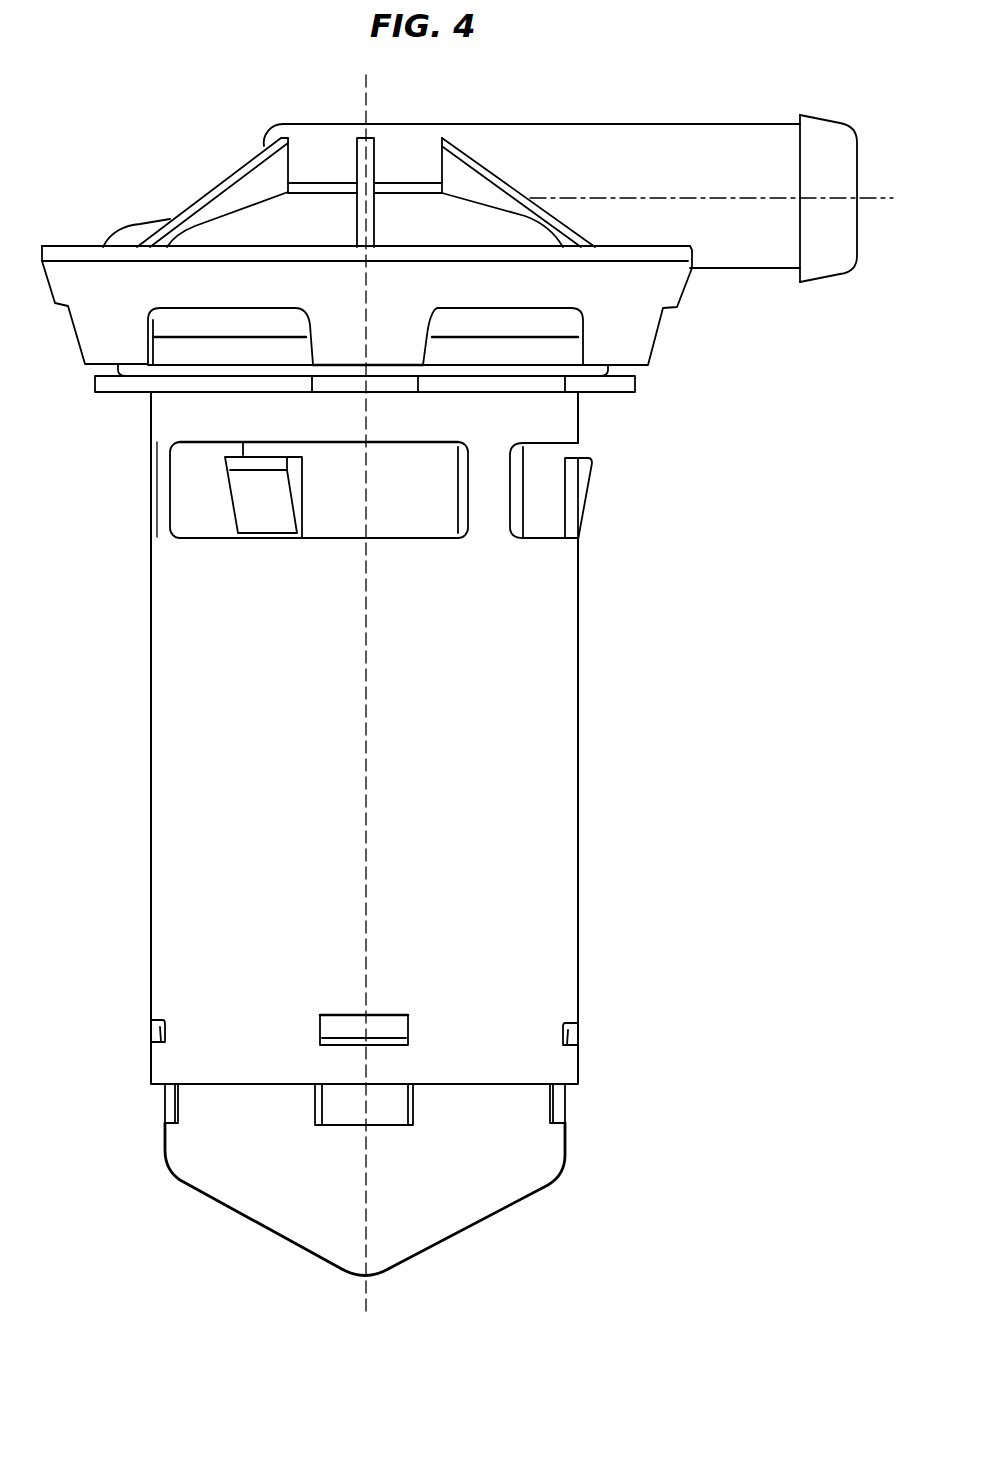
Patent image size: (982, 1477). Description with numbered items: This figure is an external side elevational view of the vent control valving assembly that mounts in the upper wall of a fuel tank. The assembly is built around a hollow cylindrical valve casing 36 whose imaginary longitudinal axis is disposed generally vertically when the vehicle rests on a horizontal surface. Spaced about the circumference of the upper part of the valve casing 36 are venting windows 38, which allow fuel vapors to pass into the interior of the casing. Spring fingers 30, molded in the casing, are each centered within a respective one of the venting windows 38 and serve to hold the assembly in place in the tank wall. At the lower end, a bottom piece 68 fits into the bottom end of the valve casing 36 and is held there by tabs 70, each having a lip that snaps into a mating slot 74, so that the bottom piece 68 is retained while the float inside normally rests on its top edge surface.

The spring fingers 30 is at (263, 510).
The valve casing 36 is at (550, 752).
The venting windows 38 is at (172, 490).
The bottom piece 68 is at (270, 1200).
The tabs 70 is at (385, 1106).
The slot 74 is at (397, 1020).